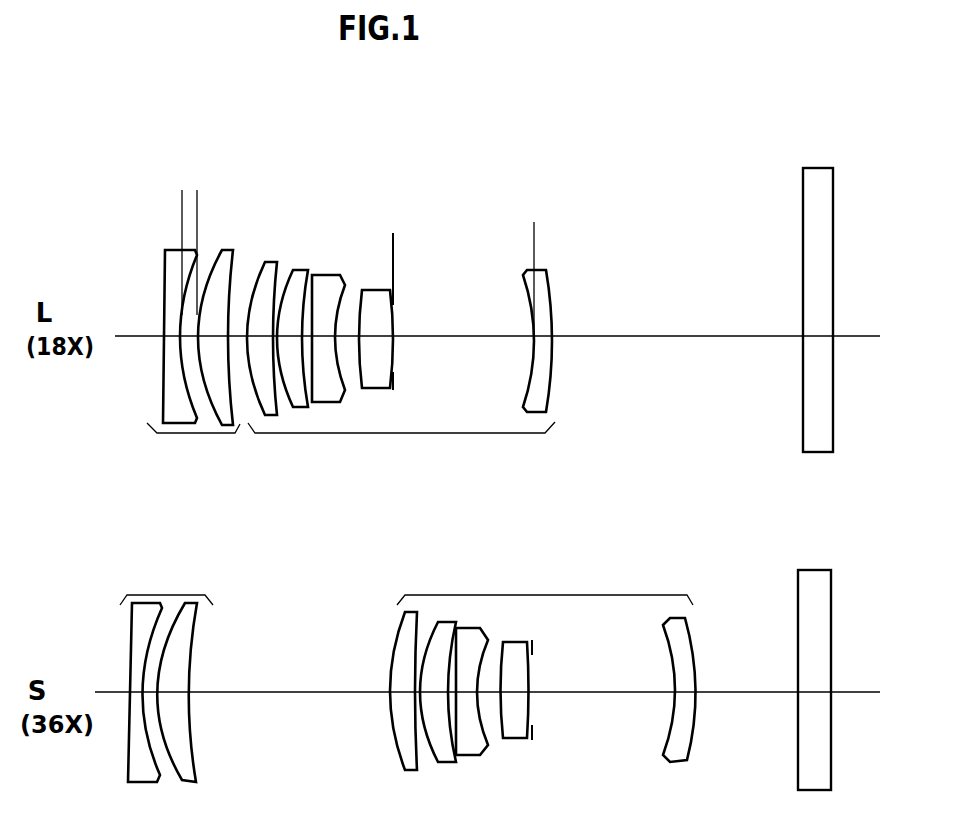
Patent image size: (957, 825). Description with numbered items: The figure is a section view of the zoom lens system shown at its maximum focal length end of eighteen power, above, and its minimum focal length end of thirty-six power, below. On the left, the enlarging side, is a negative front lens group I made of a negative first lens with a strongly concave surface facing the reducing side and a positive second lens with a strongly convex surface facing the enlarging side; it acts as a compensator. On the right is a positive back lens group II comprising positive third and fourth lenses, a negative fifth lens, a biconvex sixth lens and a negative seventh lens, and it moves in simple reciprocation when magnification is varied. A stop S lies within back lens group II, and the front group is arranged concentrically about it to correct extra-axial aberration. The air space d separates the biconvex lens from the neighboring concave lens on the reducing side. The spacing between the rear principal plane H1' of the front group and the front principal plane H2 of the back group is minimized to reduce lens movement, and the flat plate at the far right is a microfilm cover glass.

The front lens group I is at (197, 437).
The back lens group II is at (393, 436).
The stop S is at (392, 292).
The air space d is at (534, 247).
The main flat-plane on the back side of front lens group H1' is at (137, 242).
The main flat-plane on the front side of back lens group H2 is at (197, 213).